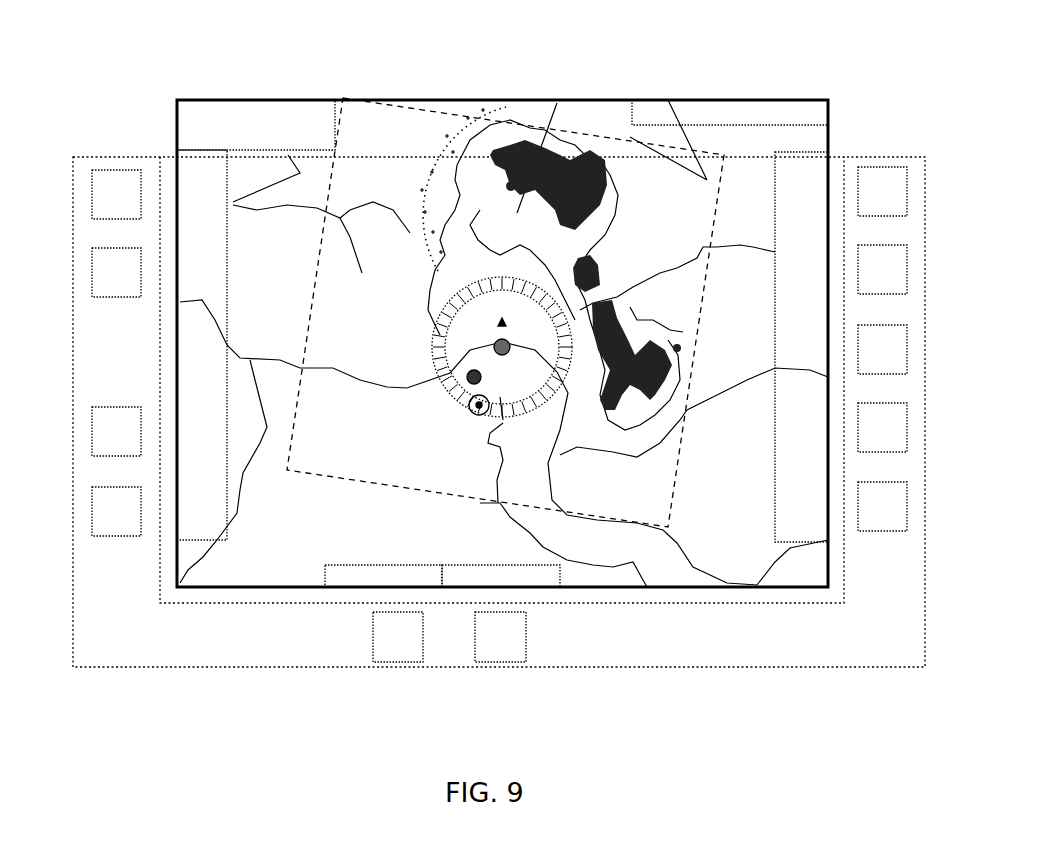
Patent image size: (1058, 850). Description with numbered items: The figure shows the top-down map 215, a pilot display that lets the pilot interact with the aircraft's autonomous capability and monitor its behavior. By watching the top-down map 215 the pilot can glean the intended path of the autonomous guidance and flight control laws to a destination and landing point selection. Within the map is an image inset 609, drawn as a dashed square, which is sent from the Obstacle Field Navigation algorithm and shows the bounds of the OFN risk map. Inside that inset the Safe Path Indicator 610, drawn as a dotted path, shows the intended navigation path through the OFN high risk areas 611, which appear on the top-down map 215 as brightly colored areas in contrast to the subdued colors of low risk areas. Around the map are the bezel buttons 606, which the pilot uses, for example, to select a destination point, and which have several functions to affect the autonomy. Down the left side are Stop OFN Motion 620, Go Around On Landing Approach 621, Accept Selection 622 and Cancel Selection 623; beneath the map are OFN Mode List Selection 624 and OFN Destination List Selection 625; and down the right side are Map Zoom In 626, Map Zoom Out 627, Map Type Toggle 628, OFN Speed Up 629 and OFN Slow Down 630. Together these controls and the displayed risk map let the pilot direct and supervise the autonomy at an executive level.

The top-down map 215 is at (340, 98).
The bezel buttons 606 is at (687, 672).
The image inset 609 is at (350, 485).
The Safe Path Indicator 610 is at (433, 157).
The OFN high risk areas 611 is at (618, 267).
The Stop OFN Motion 620 is at (116, 194).
The Go Around On Landing Approach 621 is at (116, 272).
The Accept Selection 622 is at (116, 431).
The Cancel Selection 623 is at (116, 511).
The OFN Mode List Selection 624 is at (398, 637).
The OFN Destination List Selection 625 is at (500, 637).
The Map Zoom In 626 is at (882, 191).
The Map Zoom Out 627 is at (882, 269).
The Map Type Toggle 628 is at (882, 349).
The OFN Speed Up 629 is at (882, 427).
The OFN Slow Down 630 is at (882, 506).